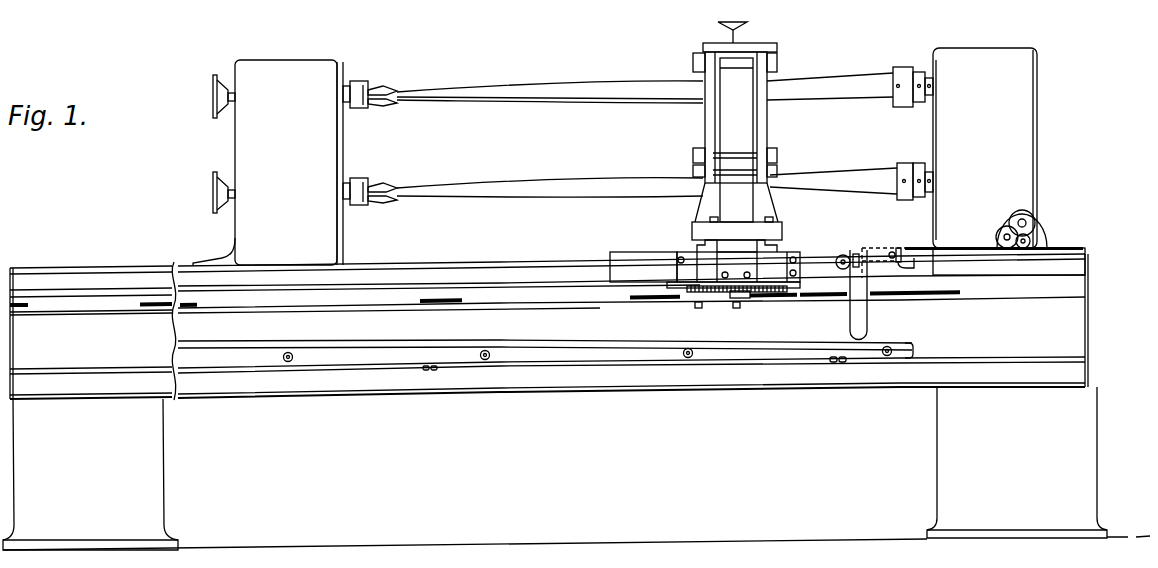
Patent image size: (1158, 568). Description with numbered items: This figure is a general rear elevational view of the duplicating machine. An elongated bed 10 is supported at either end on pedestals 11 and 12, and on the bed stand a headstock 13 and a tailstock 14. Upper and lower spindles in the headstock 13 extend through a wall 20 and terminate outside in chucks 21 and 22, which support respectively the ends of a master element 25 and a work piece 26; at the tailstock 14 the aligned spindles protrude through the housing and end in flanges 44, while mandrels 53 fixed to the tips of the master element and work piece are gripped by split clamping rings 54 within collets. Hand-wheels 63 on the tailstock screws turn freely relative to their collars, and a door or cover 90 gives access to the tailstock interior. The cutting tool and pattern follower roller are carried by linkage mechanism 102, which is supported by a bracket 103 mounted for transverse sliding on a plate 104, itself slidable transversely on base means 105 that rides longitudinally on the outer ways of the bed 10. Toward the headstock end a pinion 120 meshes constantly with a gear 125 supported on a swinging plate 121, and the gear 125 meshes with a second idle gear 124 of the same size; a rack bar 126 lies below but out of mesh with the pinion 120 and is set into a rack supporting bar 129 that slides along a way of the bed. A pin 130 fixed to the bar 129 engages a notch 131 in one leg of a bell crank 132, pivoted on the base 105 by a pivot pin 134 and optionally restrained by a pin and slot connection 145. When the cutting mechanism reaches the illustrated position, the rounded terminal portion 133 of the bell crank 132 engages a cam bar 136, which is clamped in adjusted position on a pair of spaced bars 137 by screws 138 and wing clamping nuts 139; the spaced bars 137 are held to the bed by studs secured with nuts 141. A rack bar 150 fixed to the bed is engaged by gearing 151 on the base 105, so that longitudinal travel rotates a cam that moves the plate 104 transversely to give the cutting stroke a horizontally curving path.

The bed 10 is at (576, 382).
The pedestal 11 is at (148, 460).
The pedestal 12 is at (947, 450).
The headstock 13 is at (990, 58).
The tailstock 14 is at (290, 66).
The wall 20 is at (933, 125).
The chuck 21 is at (900, 67).
The chuck 22 is at (907, 168).
The master element 25 is at (562, 82).
The work piece 26 is at (563, 182).
The flange 44 is at (337, 120).
The mandrel 53 is at (380, 104).
The split clamping ring 54 is at (360, 109).
The hand-wheel 63 is at (214, 99).
The door or cover 90 is at (235, 145).
The linkage mechanism 102 is at (703, 125).
The bracket 103 is at (698, 206).
The plate 104 is at (690, 247).
The base means 105 is at (632, 257).
The pinion 120 is at (1038, 235).
The swinging plate 121 is at (1016, 236).
The second idle gear 124 is at (1018, 216).
The gear 125 is at (998, 235).
The rack bar 126 is at (1083, 248).
The rack supporting bar 129 is at (1083, 255).
The pin 130 is at (906, 264).
The notch 131 is at (896, 252).
The bell crank 132 is at (855, 252).
The rounded terminal portion 133 is at (869, 333).
The pivot pin 134 is at (836, 257).
The cam bar 136 is at (627, 343).
The spaced bars 137 is at (746, 355).
The screws 138 is at (834, 363).
The wing clamping nuts 139 is at (843, 363).
The nuts 141 is at (486, 360).
The pin and slot connection 145 is at (865, 250).
The rack bar 150 is at (570, 295).
The gearing 151 is at (798, 292).